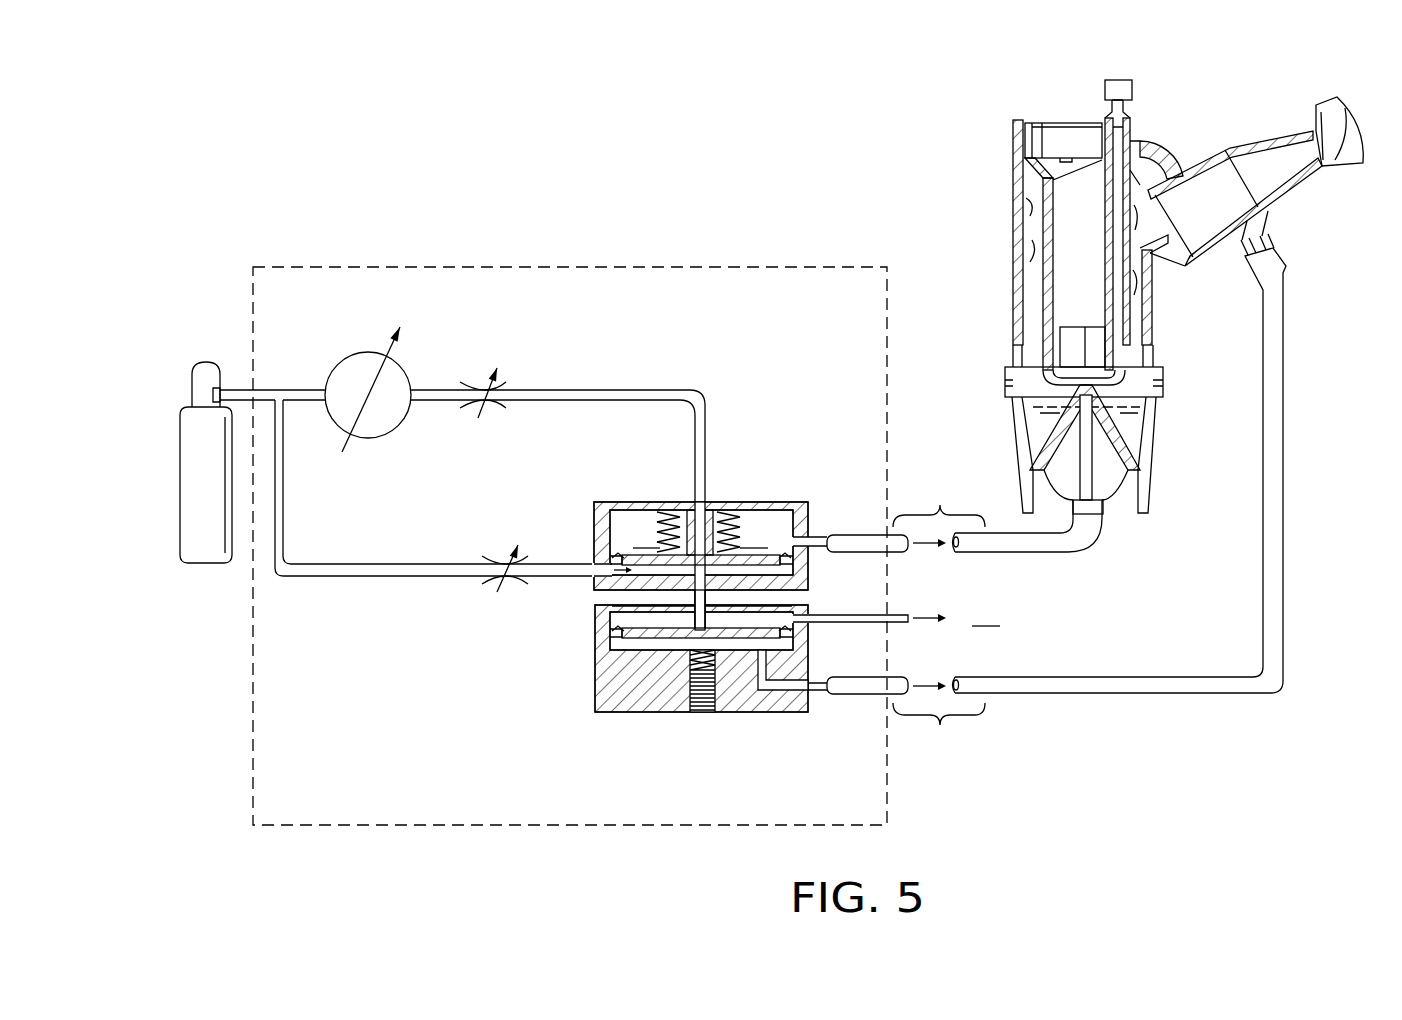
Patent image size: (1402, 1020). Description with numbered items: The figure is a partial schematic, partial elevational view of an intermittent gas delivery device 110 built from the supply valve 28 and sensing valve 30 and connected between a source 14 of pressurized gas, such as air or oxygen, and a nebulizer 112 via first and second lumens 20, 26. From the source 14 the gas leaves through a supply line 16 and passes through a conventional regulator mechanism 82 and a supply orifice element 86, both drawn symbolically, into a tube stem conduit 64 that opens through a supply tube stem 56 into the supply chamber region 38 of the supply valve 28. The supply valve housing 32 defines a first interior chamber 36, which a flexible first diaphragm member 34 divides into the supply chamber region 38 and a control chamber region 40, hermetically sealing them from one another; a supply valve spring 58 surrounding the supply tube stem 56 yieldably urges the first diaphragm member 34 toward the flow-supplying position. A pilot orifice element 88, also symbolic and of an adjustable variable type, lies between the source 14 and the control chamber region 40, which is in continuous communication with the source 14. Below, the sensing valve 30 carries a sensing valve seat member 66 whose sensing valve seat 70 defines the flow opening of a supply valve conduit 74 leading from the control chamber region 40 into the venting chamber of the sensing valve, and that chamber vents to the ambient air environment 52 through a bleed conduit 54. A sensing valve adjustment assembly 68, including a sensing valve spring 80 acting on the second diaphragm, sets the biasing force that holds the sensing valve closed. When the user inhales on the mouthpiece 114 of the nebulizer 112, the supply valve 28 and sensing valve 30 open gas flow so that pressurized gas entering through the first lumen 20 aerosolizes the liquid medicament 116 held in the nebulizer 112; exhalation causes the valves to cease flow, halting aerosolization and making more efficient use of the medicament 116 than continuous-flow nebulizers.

The source of pressurized gas 14 is at (215, 491).
The supply line 16 is at (236, 389).
The first lumen 20 is at (964, 515).
The second lumen 26 is at (1047, 493).
The supply valve 28 is at (812, 495).
The sensing valve 30 is at (818, 648).
The supply valve housing 32 is at (627, 502).
The first diaphragm member 34 is at (795, 540).
The first interior chamber 36 is at (646, 534).
The supply chamber region 38 is at (755, 534).
The control chamber region 40 is at (790, 566).
The ambient air environment 52 is at (986, 613).
The bleed conduit 54 is at (890, 615).
The supply tube stem 56 is at (657, 523).
The supply valve spring 58 is at (740, 505).
The tube stem conduit 64 is at (632, 390).
The sensing valve seat member 66 is at (766, 612).
The sensing valve adjustment assembly 68 is at (704, 718).
The sensing valve seat 70 is at (627, 626).
The supply valve conduit 74 is at (693, 595).
The sensing valve spring 80 is at (712, 668).
The regulator mechanism 82 is at (337, 365).
The supply orifice element 86 is at (498, 387).
The pilot orifice element 88 is at (498, 588).
The intermittent gas delivery device 110 is at (823, 267).
The nebulizer 112 is at (1160, 440).
The mouthpiece 114 is at (1316, 128).
The liquid medicament 116 is at (1015, 425).